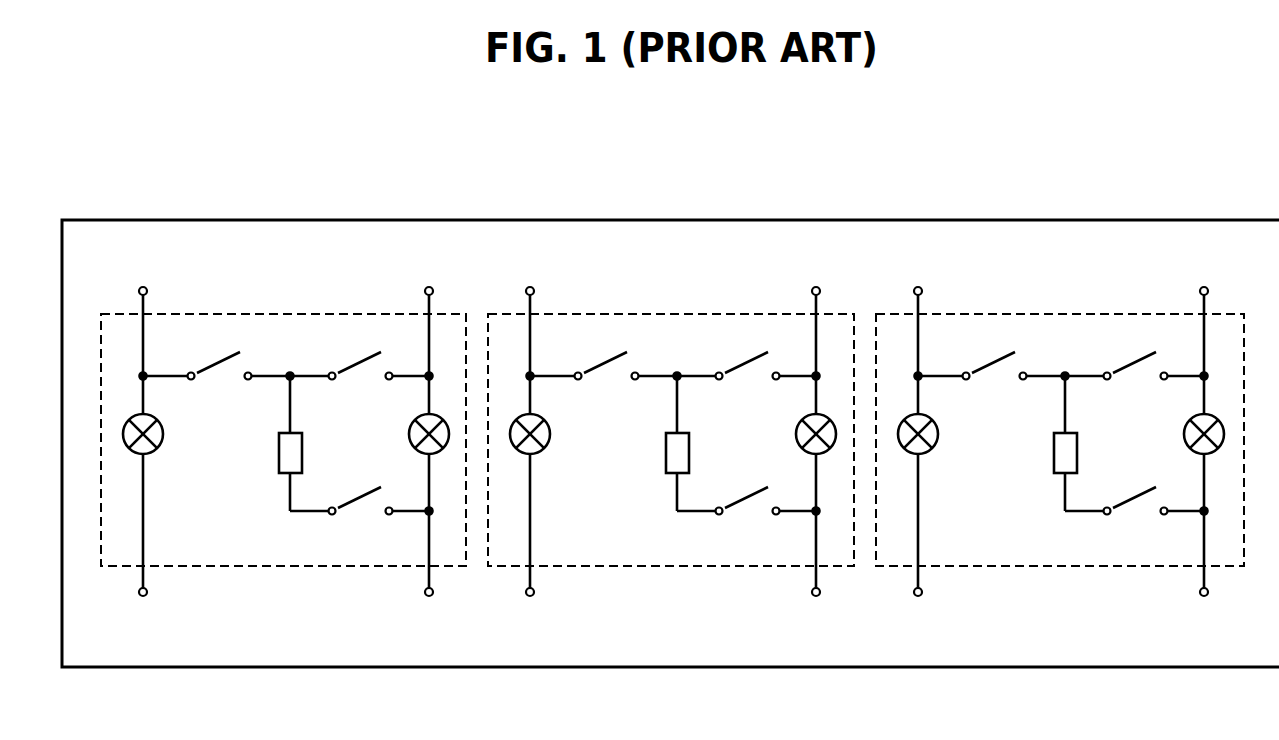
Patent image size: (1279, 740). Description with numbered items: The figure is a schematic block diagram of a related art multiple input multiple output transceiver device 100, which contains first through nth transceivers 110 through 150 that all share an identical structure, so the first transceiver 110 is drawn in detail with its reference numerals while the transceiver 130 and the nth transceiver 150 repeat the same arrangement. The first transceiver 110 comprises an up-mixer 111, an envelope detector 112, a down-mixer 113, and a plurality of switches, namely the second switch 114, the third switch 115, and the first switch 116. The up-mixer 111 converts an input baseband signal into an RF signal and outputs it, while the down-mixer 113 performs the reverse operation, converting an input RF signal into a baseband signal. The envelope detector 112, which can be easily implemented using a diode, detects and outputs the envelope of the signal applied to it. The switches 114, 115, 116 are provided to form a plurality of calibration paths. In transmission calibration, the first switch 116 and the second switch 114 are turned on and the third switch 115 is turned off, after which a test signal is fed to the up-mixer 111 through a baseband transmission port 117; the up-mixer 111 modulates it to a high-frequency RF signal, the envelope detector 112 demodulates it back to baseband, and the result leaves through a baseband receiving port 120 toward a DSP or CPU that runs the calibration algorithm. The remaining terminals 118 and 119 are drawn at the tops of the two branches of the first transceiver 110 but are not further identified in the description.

The MIMO transceiver device 100 is at (983, 218).
The first transceiver 110 is at (331, 312).
The up-mixer 111 is at (157, 449).
The envelope detector 112 is at (279, 436).
The down-mixer 113 is at (412, 426).
The second switch 114 is at (219, 364).
The third switch 115 is at (357, 364).
The first switch 116 is at (357, 499).
The baseband transmission port 117 is at (143, 598).
The first upper terminal 118 is at (143, 286).
The second upper terminal 119 is at (429, 286).
The baseband receiving port 120 is at (429, 598).
The transceiver 130 is at (697, 312).
The nth transceiver 150 is at (1087, 312).